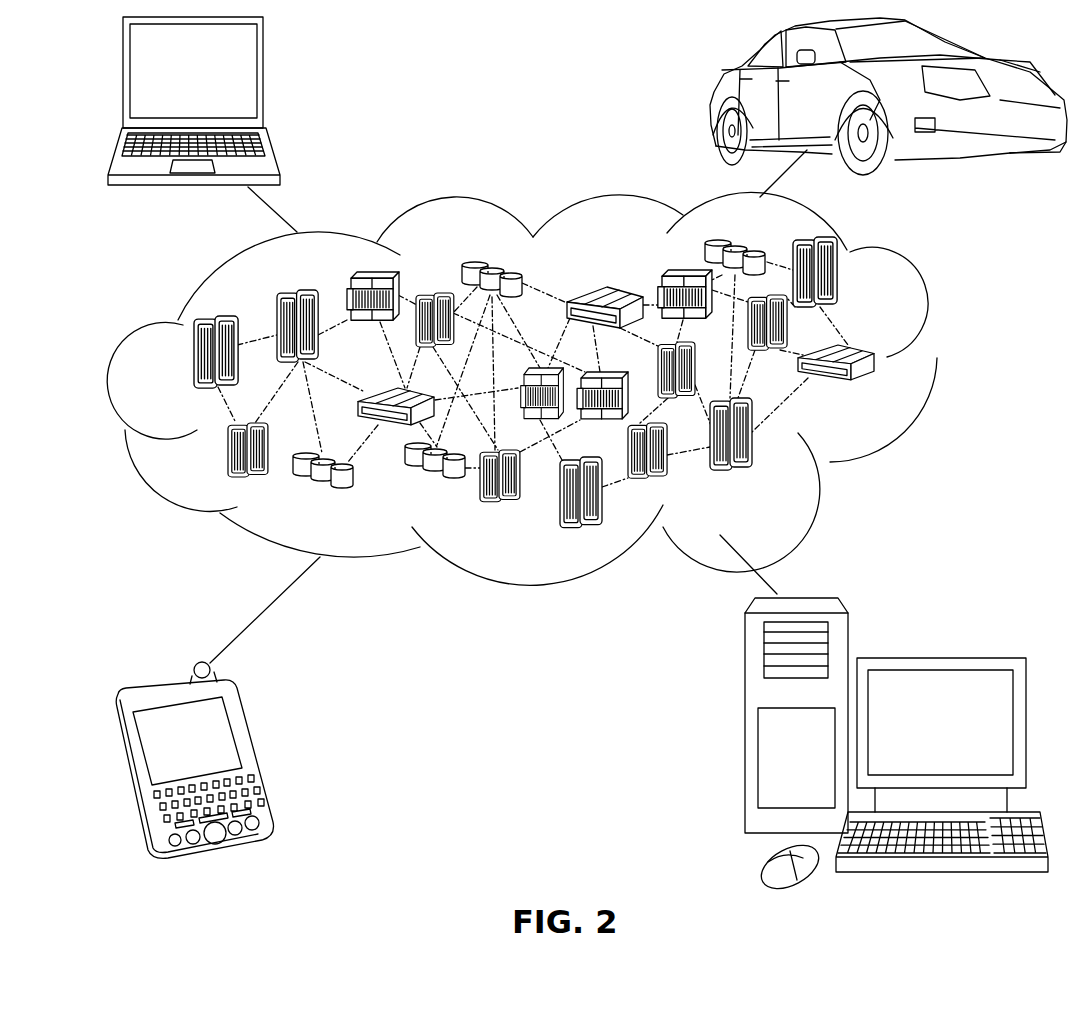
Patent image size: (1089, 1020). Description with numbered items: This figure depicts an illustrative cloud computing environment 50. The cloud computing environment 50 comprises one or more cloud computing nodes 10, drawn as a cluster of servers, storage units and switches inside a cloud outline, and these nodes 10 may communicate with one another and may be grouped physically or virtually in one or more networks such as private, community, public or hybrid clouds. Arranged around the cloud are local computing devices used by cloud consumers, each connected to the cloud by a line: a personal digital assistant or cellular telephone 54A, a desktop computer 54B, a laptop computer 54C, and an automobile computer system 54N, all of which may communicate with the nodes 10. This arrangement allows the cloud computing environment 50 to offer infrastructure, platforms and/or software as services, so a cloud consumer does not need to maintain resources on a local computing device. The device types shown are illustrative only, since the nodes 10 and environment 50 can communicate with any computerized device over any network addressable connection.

The cloud computing nodes 10 is at (883, 392).
The cloud computing environment 50 is at (937, 362).
The personal digital assistant (PDA) or cellular telephone 54A is at (252, 757).
The desktop computer 54B is at (940, 657).
The laptop computer 54C is at (264, 80).
The automobile computer system 54N is at (716, 98).